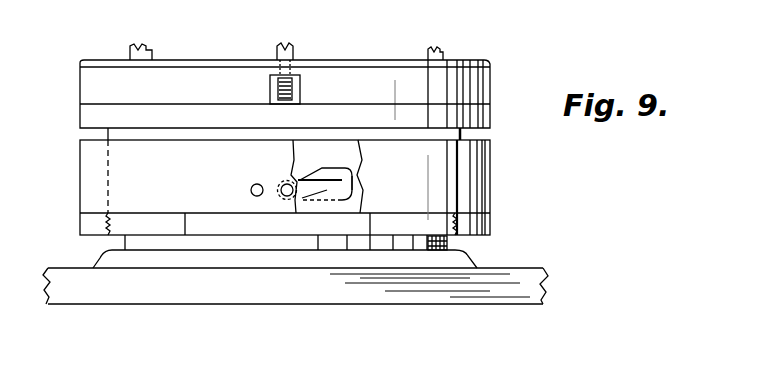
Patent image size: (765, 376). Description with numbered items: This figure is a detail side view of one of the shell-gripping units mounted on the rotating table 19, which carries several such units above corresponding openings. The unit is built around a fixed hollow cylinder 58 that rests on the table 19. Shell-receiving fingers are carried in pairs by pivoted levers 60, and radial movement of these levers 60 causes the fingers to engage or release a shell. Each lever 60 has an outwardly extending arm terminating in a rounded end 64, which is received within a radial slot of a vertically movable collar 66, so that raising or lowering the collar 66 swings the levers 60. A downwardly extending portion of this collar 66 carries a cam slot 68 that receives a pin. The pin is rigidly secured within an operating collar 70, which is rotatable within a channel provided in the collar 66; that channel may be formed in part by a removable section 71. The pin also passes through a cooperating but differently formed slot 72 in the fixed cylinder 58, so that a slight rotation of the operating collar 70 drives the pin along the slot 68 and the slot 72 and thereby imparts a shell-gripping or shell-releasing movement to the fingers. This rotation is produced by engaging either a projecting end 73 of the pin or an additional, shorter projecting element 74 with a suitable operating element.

The rotating table 19 is at (428, 290).
The fixed hollow cylinder 58 is at (447, 244).
The lever 60 is at (286, 43).
The rounded end 64 is at (285, 92).
The vertically movable collar 66 is at (470, 118).
The cam slot 68 is at (328, 172).
The operating collar 70 is at (468, 182).
The removable section 71 is at (465, 88).
The slot 72 is at (340, 184).
The projecting end 73 is at (283, 184).
The shorter projecting element 74 is at (251, 190).